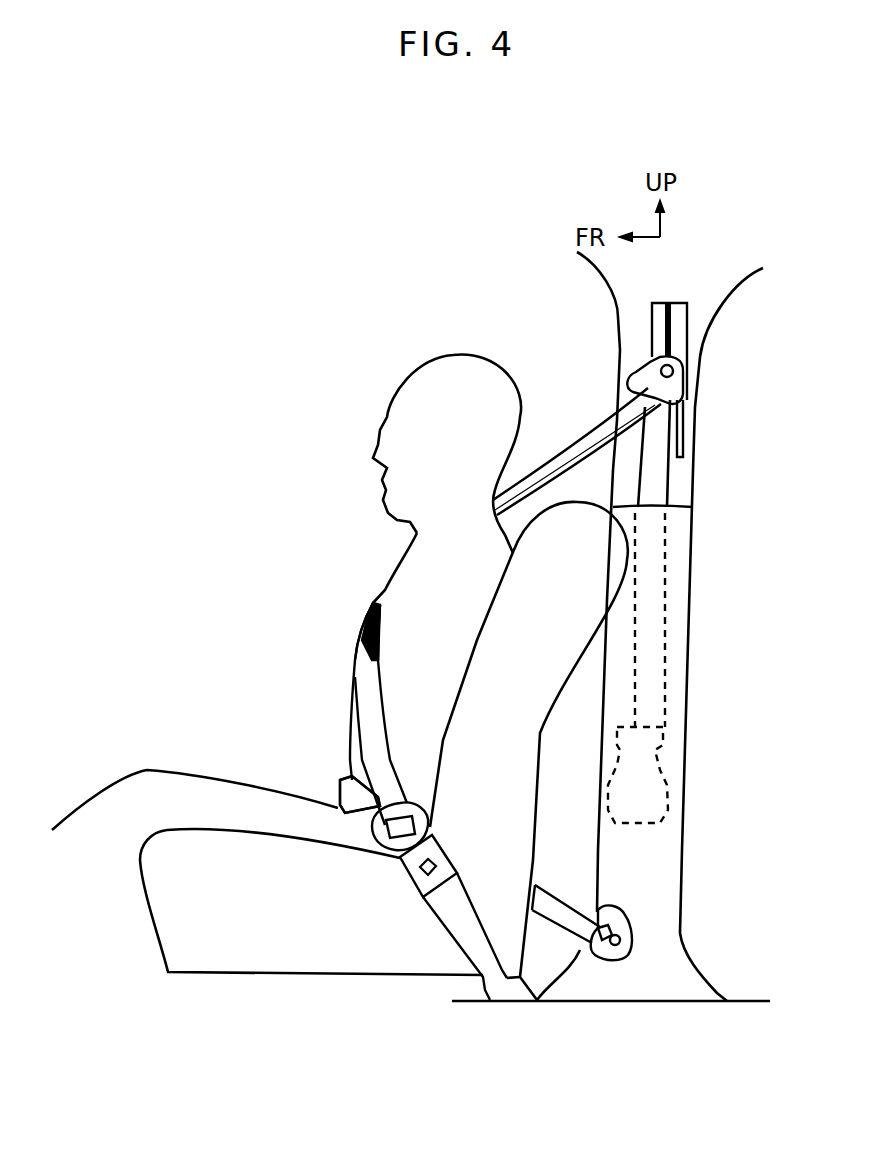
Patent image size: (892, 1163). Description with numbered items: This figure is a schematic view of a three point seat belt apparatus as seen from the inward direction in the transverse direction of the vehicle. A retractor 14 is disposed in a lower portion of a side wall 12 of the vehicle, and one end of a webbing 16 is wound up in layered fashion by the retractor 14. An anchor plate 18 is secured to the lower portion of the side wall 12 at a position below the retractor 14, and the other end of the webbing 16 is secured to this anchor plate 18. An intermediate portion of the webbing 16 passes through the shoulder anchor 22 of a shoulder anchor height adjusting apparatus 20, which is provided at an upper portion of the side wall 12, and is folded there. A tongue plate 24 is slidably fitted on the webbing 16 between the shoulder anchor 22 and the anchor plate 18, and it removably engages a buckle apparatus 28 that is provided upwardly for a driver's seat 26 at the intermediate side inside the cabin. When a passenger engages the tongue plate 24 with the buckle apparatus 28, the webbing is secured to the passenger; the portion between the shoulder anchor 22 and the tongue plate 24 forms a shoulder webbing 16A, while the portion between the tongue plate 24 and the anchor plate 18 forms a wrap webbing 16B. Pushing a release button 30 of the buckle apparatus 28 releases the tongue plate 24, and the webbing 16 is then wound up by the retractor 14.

The side wall 12 is at (625, 262).
The retractor 14 is at (667, 783).
The webbing 16 is at (357, 739).
The shoulder webbing 16A is at (365, 663).
The wrap webbing 16B is at (340, 792).
The anchor plate 18 is at (622, 917).
The shoulder anchor height adjusting apparatus 20 is at (676, 298).
The shoulder anchor 22 is at (703, 399).
The tongue plate 24 is at (432, 812).
The driver's seat 26 is at (538, 762).
The buckle apparatus 28 is at (404, 879).
The release button 30 is at (425, 900).